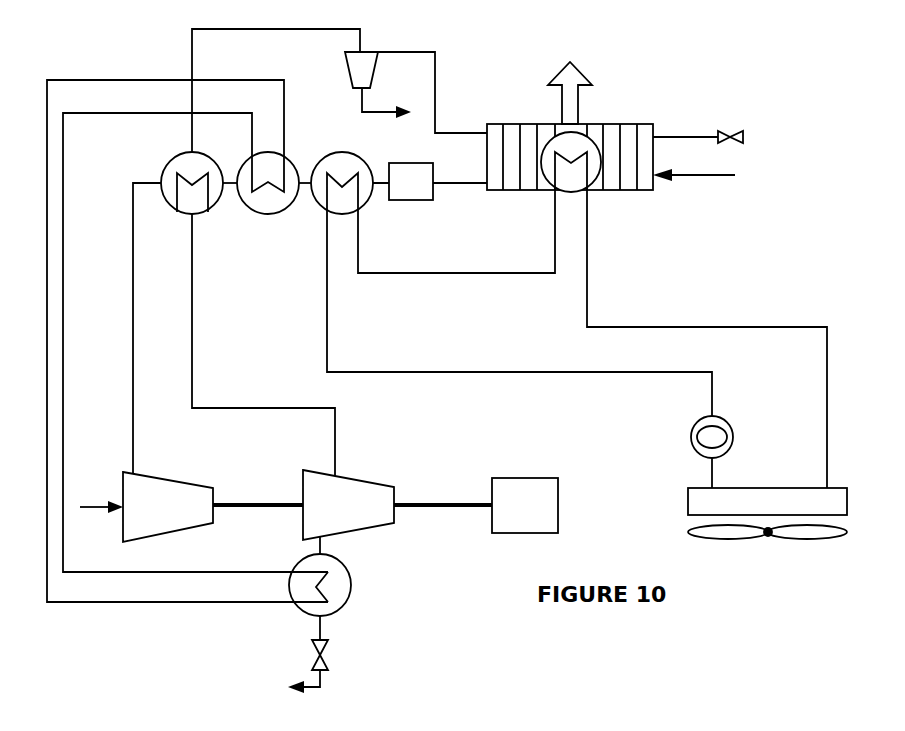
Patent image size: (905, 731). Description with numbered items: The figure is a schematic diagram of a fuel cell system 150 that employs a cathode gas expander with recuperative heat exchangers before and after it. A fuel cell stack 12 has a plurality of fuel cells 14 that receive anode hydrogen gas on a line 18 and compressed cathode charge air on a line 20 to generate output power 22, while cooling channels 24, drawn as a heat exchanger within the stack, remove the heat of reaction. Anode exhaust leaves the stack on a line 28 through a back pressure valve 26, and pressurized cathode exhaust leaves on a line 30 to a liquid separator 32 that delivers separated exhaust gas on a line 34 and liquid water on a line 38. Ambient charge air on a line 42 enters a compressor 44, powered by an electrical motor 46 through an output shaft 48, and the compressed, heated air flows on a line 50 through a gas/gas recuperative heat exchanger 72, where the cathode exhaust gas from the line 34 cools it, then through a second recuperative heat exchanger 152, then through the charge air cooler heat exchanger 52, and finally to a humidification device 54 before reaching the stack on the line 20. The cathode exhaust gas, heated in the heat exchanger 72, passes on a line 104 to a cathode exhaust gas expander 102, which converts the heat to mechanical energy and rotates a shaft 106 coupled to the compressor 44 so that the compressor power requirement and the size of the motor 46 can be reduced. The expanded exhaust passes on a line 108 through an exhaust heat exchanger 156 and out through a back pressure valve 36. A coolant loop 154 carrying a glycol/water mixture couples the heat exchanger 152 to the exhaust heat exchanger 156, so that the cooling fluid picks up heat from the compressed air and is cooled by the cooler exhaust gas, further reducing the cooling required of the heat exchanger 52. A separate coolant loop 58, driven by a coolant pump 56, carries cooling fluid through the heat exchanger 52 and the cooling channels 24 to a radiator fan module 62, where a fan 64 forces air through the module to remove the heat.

The fuel cell stack 12 is at (518, 123).
The fuel cells 14 is at (645, 132).
The line 18 is at (717, 176).
The line 20 is at (453, 183).
The output power 22 is at (557, 63).
The cooling channels 24 is at (603, 192).
The back pressure valve 26 is at (745, 137).
The line 28 is at (686, 137).
The line 30 is at (437, 72).
The liquid separator 32 is at (378, 52).
The line 34 is at (190, 70).
The back pressure valve 36 is at (325, 656).
The line 38 is at (358, 112).
The line 42 is at (100, 508).
The compressor 44 is at (197, 485).
The electrical motor 46 is at (538, 478).
The output shaft 48 is at (455, 503).
The line 50 is at (133, 273).
The heat exchanger 52 is at (315, 200).
The humidification device 54 is at (405, 200).
The coolant pump 56 is at (692, 435).
The coolant loop 58 is at (653, 327).
The radiator fan module 62 is at (790, 488).
The fan 64 is at (688, 532).
The recuperative heat exchanger 72 is at (175, 160).
The cathode exhaust gas expander 102 is at (370, 481).
The line 104 is at (313, 409).
The shaft 106 is at (287, 508).
The line 108 is at (325, 546).
The fuel cell system 150 is at (780, 243).
The second recuperative heat exchanger 152 is at (247, 207).
The coolant loop 154 is at (63, 212).
The exhaust heat exchanger 156 is at (298, 610).